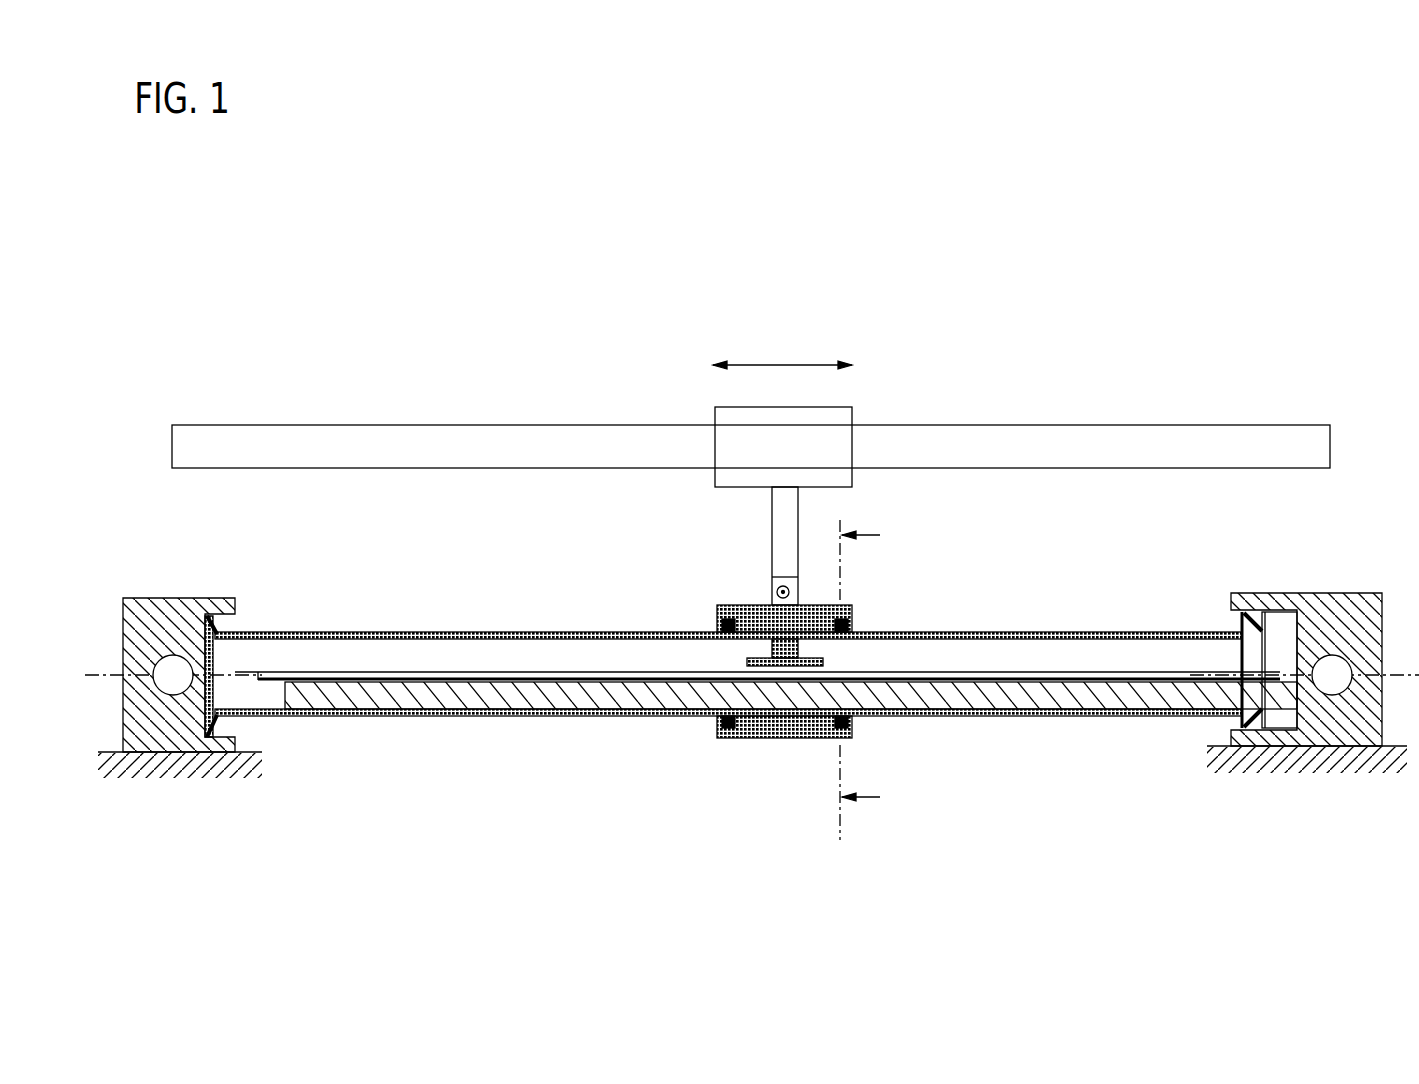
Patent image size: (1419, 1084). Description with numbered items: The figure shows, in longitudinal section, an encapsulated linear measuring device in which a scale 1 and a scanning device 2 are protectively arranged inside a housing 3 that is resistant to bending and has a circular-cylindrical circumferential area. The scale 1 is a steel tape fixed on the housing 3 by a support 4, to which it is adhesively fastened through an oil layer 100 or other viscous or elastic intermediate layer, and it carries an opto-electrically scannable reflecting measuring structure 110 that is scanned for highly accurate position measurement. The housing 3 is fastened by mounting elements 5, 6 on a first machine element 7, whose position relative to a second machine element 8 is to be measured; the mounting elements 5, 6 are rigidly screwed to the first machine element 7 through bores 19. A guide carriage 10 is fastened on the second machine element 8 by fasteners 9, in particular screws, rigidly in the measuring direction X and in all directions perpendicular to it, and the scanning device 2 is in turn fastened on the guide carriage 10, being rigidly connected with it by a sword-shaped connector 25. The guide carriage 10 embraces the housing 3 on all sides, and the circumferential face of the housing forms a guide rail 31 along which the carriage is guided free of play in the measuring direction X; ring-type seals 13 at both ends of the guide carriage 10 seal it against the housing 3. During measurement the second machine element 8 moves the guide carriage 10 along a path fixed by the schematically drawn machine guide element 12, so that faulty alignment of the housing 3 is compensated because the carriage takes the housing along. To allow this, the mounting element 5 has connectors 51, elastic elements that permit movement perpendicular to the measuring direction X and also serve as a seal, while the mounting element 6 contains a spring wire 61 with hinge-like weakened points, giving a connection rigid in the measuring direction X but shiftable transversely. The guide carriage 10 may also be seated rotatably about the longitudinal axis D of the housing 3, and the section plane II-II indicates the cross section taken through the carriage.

The scale 1 is at (728, 585).
The scanning device 2 is at (841, 582).
The housing 3 is at (791, 785).
The guide rail 31 is at (791, 695).
The support 4 is at (728, 798).
The mounting element 5 is at (169, 615).
The mounting element 6 is at (1306, 624).
The first machine element 7 is at (755, 817).
The second machine element 8 is at (829, 398).
The fasteners 9 is at (749, 546).
The guide carriage 10 is at (780, 802).
The machine guide element 12 is at (751, 385).
The ring-type seals 13 is at (740, 753).
The bores 19 is at (752, 771).
The sword-shaped connector 25 is at (730, 593).
The connectors 51 is at (741, 750).
The spring wire 61 is at (1231, 750).
The oil layer 100 is at (1026, 785).
The measuring structure 110 is at (757, 602).
The longitudinal axis D is at (267, 604).
The measuring direction X is at (782, 342).
The section line II is at (862, 662).